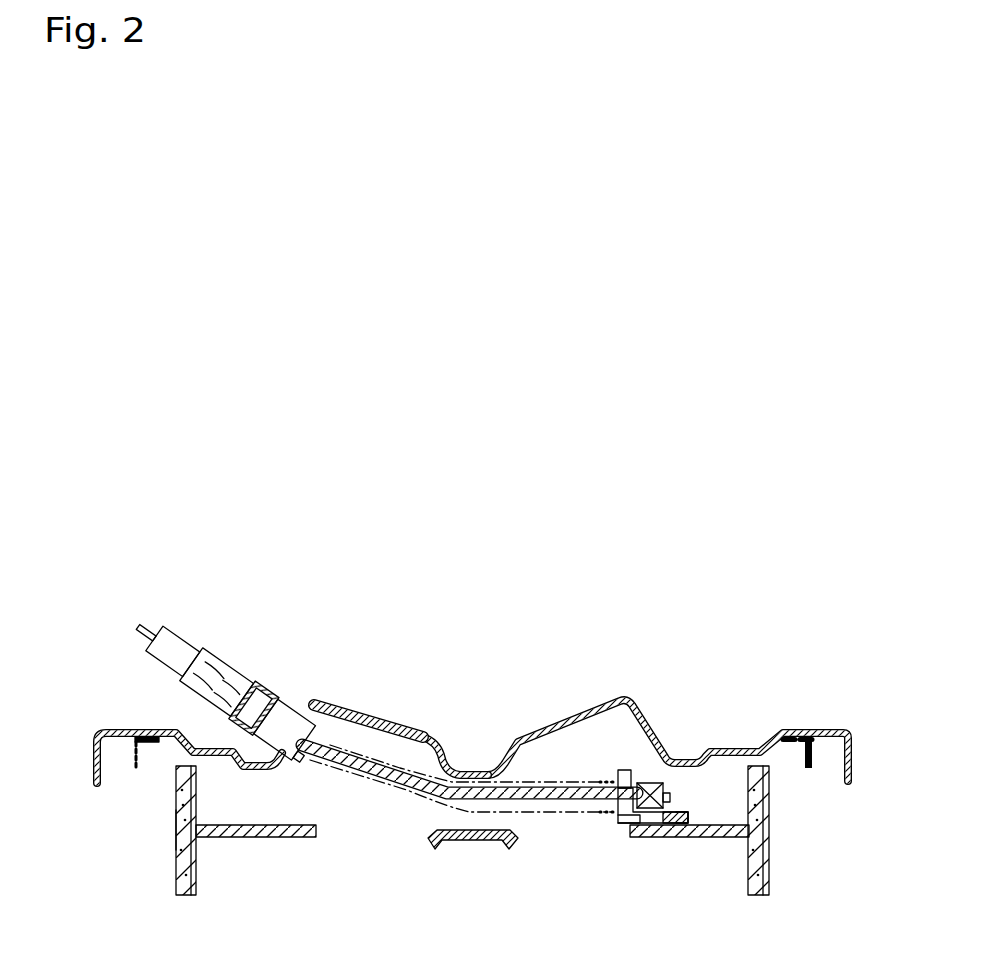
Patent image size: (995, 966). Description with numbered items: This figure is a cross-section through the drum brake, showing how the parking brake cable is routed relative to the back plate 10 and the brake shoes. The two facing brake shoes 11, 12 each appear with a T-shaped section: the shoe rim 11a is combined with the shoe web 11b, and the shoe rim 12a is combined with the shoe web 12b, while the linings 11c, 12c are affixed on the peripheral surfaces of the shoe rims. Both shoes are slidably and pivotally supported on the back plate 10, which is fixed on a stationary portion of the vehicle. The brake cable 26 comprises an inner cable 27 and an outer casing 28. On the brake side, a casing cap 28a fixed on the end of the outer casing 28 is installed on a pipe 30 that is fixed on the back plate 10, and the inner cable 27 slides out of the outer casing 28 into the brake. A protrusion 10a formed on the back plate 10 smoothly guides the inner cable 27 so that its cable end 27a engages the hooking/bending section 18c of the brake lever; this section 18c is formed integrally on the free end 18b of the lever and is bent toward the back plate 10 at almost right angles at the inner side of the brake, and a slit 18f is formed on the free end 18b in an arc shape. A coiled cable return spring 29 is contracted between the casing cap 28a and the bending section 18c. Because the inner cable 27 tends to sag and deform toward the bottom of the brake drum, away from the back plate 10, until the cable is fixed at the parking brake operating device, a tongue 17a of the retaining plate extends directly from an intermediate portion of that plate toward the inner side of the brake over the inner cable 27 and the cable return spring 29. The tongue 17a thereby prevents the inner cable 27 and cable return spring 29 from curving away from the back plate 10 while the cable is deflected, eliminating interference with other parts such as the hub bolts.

The back plate 10 is at (594, 702).
The protrusion 10a is at (472, 770).
The brake shoe 11 is at (777, 877).
The shoe rim 11a is at (750, 880).
The shoe web 11b is at (657, 838).
The lining 11c is at (770, 818).
The brake shoe 12 is at (176, 875).
The shoe rim 12a is at (197, 882).
The shoe web 12b is at (293, 838).
The lining 12c is at (176, 830).
The tongue 17a is at (470, 846).
The free end 18b is at (689, 812).
The hooking/bending section 18c is at (624, 770).
The slit 18f is at (617, 822).
The brake cable 26 is at (216, 648).
The inner cable 27 is at (400, 770).
The cable end 27a is at (650, 783).
The outer casing 28 is at (175, 630).
The casing cap 28a is at (256, 680).
The cable return spring 29 is at (338, 700).
The pipe 30 is at (278, 684).